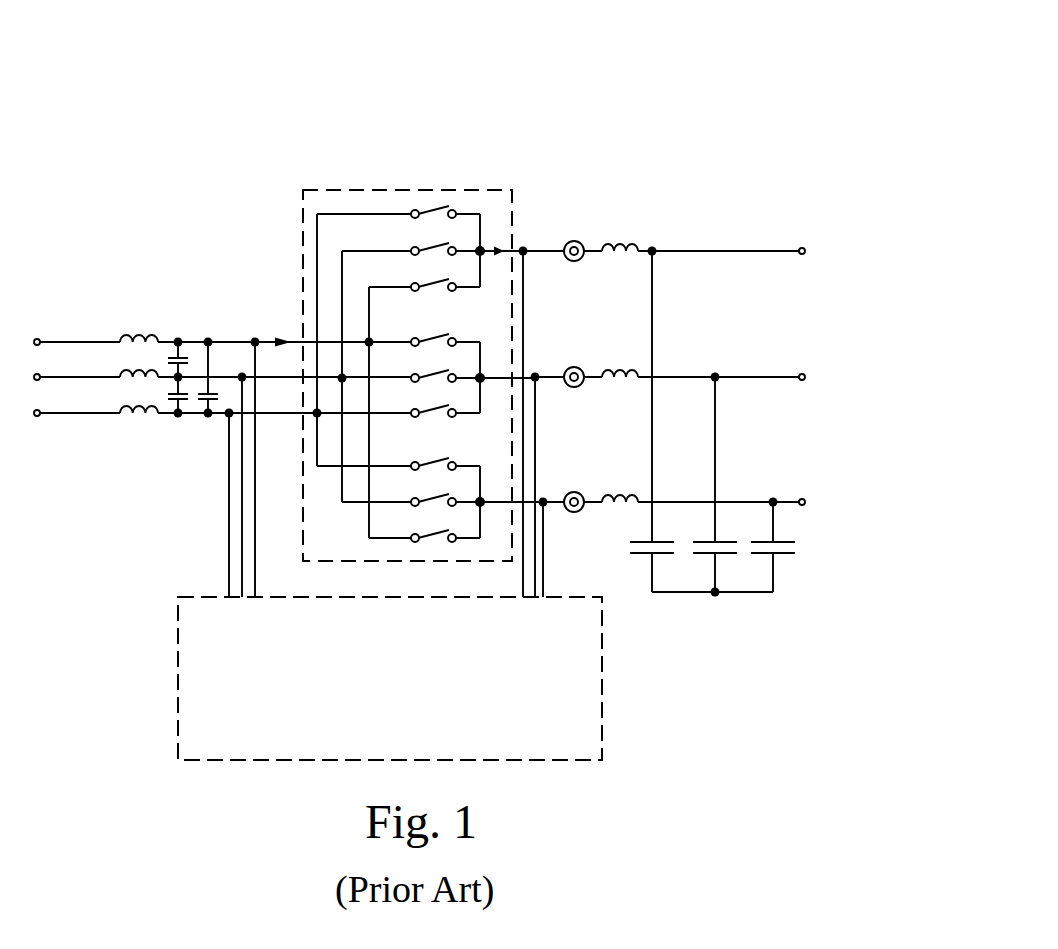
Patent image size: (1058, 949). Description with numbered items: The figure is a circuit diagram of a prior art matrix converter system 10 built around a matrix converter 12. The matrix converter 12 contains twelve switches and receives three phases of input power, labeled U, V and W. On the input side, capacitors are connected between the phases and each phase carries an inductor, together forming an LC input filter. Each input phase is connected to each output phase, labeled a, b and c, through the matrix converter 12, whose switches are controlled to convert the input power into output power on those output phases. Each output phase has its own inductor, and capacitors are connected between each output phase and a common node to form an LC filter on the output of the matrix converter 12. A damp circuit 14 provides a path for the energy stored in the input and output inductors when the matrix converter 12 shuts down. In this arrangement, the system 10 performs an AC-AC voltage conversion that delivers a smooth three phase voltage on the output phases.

The matrix converter system 10 is at (672, 72).
The matrix converter 12 is at (458, 190).
The damp circuit 14 is at (390, 678).